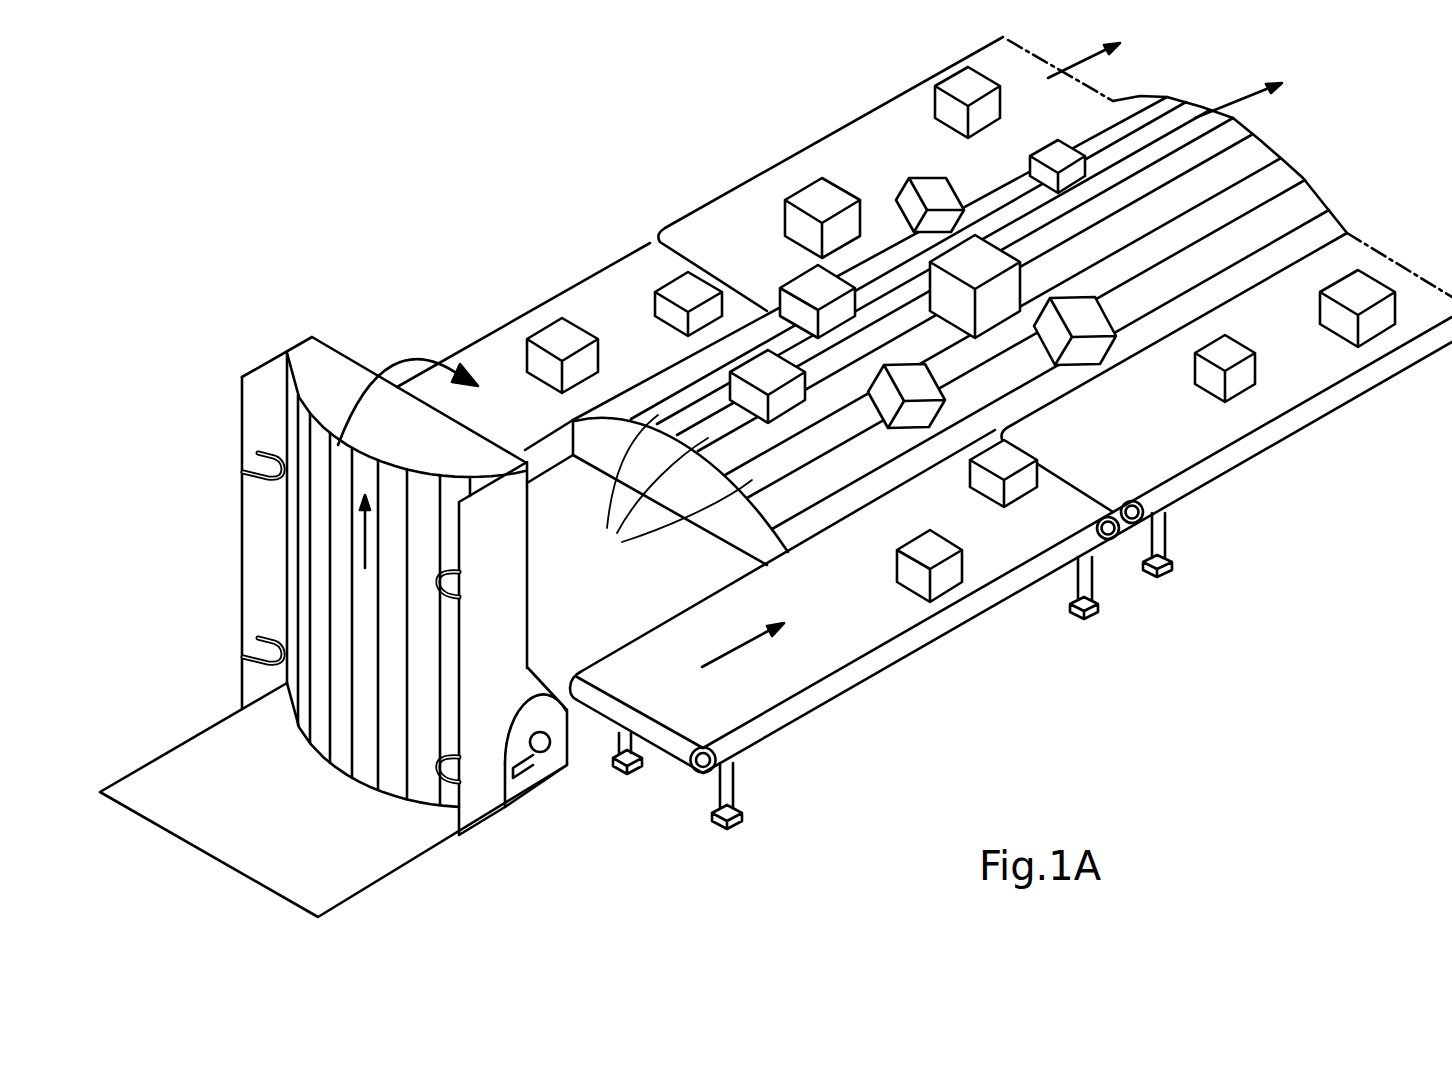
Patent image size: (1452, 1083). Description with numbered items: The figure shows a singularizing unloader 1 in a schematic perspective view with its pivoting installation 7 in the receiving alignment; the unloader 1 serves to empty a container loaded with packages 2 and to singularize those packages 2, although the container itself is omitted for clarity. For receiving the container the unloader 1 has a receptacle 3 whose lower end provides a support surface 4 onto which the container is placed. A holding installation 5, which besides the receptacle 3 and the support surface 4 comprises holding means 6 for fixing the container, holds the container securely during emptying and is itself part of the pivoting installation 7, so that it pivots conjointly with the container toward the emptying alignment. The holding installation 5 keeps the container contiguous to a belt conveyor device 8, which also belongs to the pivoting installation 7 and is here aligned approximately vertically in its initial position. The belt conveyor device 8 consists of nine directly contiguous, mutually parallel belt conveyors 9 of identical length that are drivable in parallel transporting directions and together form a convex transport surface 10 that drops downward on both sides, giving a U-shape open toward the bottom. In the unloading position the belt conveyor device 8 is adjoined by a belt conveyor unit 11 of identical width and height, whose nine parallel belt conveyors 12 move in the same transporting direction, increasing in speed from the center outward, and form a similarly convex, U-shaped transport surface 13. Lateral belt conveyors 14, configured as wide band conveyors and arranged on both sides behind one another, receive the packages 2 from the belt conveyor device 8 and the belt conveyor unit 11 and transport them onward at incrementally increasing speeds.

The singularizing unloader 1 is at (455, 178).
The packages 2 is at (678, 287).
The receptacle 3 is at (205, 629).
The support surface 4 is at (213, 838).
The holding installation 5 is at (253, 552).
The holding means 6 is at (253, 478).
The pivoting installation 7 is at (372, 550).
The belt conveyor device 8 is at (306, 687).
The belt conveyors 9 is at (393, 782).
The transport surface 10 is at (306, 455).
The belt conveyor unit 11 is at (1278, 179).
The belt conveyors 12 is at (681, 488).
The transport surface 13 is at (1160, 94).
The lateral belt conveyors 14 is at (742, 212).